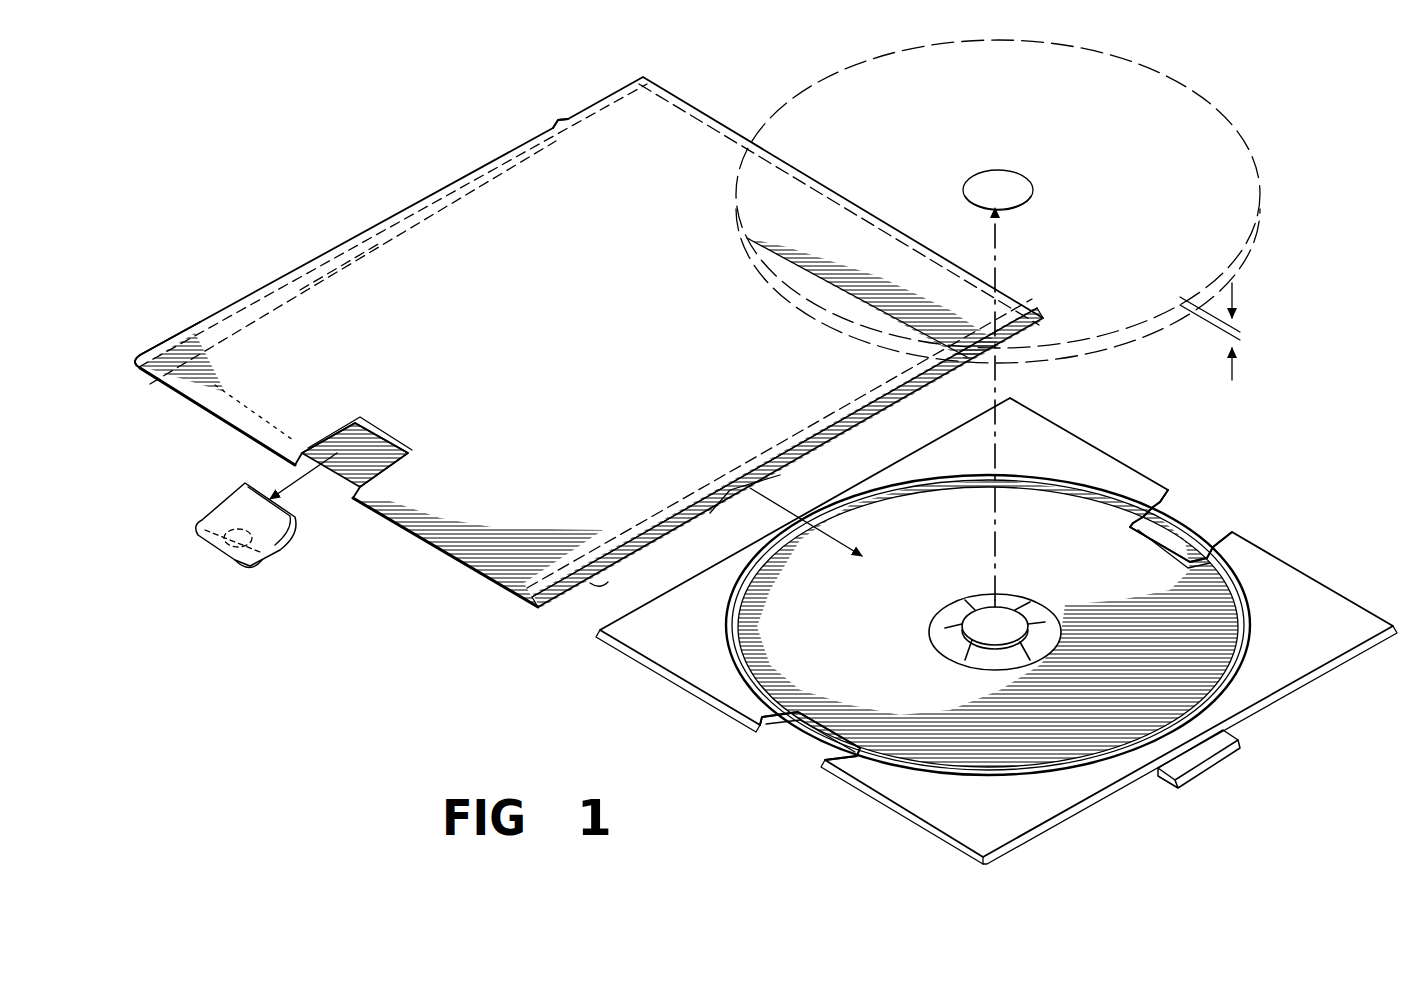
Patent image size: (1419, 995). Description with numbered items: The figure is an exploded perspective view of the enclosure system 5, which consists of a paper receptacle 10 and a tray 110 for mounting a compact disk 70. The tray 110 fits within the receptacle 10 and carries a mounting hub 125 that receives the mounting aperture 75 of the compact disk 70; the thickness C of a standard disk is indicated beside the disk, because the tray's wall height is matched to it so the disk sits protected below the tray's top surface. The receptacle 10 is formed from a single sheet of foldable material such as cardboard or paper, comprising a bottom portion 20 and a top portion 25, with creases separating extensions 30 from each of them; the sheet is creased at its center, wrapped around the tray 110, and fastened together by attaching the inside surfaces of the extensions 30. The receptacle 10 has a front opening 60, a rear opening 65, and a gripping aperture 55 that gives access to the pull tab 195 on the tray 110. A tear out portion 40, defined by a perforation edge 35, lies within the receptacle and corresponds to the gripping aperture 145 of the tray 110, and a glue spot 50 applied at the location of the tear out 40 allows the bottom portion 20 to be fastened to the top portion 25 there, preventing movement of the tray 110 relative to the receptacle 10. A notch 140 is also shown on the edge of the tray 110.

The enclosure system 5 is at (345, 100).
The paper receptacle 10 is at (452, 165).
The bottom portion 20 is at (850, 456).
The top portion 25 is at (365, 243).
The extension 30 is at (590, 108).
The perforation edge 35 is at (333, 428).
The tear out portion 40 is at (240, 492).
The glue spot 50 is at (215, 520).
The gripping aperture 55 is at (742, 493).
The front opening 60 is at (600, 585).
The rear opening 65 is at (200, 325).
The compact disk 70 is at (1212, 100).
The mounting aperture 75 is at (1022, 178).
The thickness C is at (1222, 331).
The tray 110 is at (1094, 440).
The mounting hub 125 is at (1010, 610).
The notch 140 is at (1188, 516).
The gripping aperture 145 is at (805, 742).
The pull tab 195 is at (1238, 740).